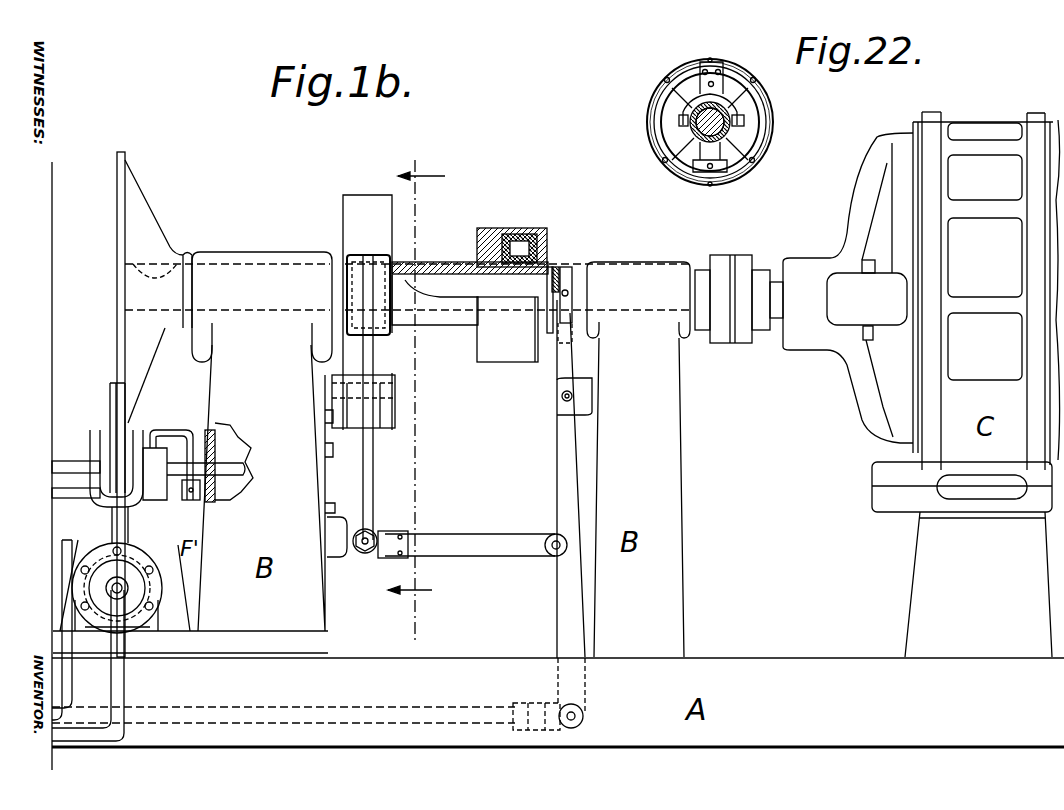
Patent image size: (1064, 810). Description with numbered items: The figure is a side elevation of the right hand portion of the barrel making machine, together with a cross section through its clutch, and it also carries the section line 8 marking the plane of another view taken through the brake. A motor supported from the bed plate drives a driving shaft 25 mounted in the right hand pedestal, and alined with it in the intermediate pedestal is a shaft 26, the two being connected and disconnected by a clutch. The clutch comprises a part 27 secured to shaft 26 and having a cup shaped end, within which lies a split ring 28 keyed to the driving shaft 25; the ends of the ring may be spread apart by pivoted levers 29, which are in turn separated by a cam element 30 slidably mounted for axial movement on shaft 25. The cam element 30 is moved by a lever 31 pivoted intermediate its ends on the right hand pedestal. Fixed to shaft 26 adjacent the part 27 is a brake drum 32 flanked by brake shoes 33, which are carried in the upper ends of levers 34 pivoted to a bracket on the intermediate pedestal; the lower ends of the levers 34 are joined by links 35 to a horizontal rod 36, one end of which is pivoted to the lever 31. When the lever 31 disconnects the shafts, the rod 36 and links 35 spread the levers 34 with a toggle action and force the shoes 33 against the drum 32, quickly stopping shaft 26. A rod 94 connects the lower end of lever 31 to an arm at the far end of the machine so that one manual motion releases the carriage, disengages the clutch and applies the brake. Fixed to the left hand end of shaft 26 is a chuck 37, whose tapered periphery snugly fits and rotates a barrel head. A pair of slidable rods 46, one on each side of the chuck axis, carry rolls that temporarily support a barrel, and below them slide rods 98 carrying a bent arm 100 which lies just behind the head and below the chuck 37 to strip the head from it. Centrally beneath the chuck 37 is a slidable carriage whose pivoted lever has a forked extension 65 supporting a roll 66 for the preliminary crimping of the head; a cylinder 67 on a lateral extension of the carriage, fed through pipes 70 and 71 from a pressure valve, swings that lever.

In FIG. 1B, the section line 8- 8 is at (416, 391).
In FIG. 1B, the driving shaft 25 is at (600, 270).
In FIG. 22, the driving shaft 25 is at (695, 135).
In FIG. 1B, the shaft 26 is at (433, 280).
In FIG. 1B, the clutch part 27 is at (509, 228).
In FIG. 22, the clutch part 27 is at (763, 157).
In FIG. 1B, the split ring 28 is at (530, 255).
In FIG. 22, the split ring 28 is at (758, 97).
In FIG. 1B, the pivoted levers 29 is at (545, 252).
In FIG. 22, the pivoted levers 29 is at (740, 120).
In FIG. 1B, the cam element 30 is at (555, 280).
In FIG. 22, the cam element 30 is at (688, 124).
In FIG. 1B, the lever 31 is at (558, 442).
In FIG. 1B, the brake drum 32 is at (362, 195).
In FIG. 1B, the brake shoes 33 is at (352, 253).
In FIG. 1B, the levers 34 is at (366, 468).
In FIG. 1B, the links 35 is at (385, 538).
In FIG. 1B, the rod 36 is at (478, 540).
In FIG. 1B, the chuck 37 is at (118, 342).
In FIG. 1B, the rods 46 is at (68, 460).
In FIG. 1B, the forked extension 65 is at (115, 516).
In FIG. 1B, the roll 66 is at (110, 421).
In FIG. 1B, the cylinder 67 is at (165, 590).
In FIG. 1B, the pipe 70 is at (68, 678).
In FIG. 1B, the pipe 71 is at (122, 684).
In FIG. 1B, the rod 94 is at (418, 712).
In FIG. 1B, the rod 98 is at (66, 490).
In FIG. 1B, the arm 100 is at (160, 437).